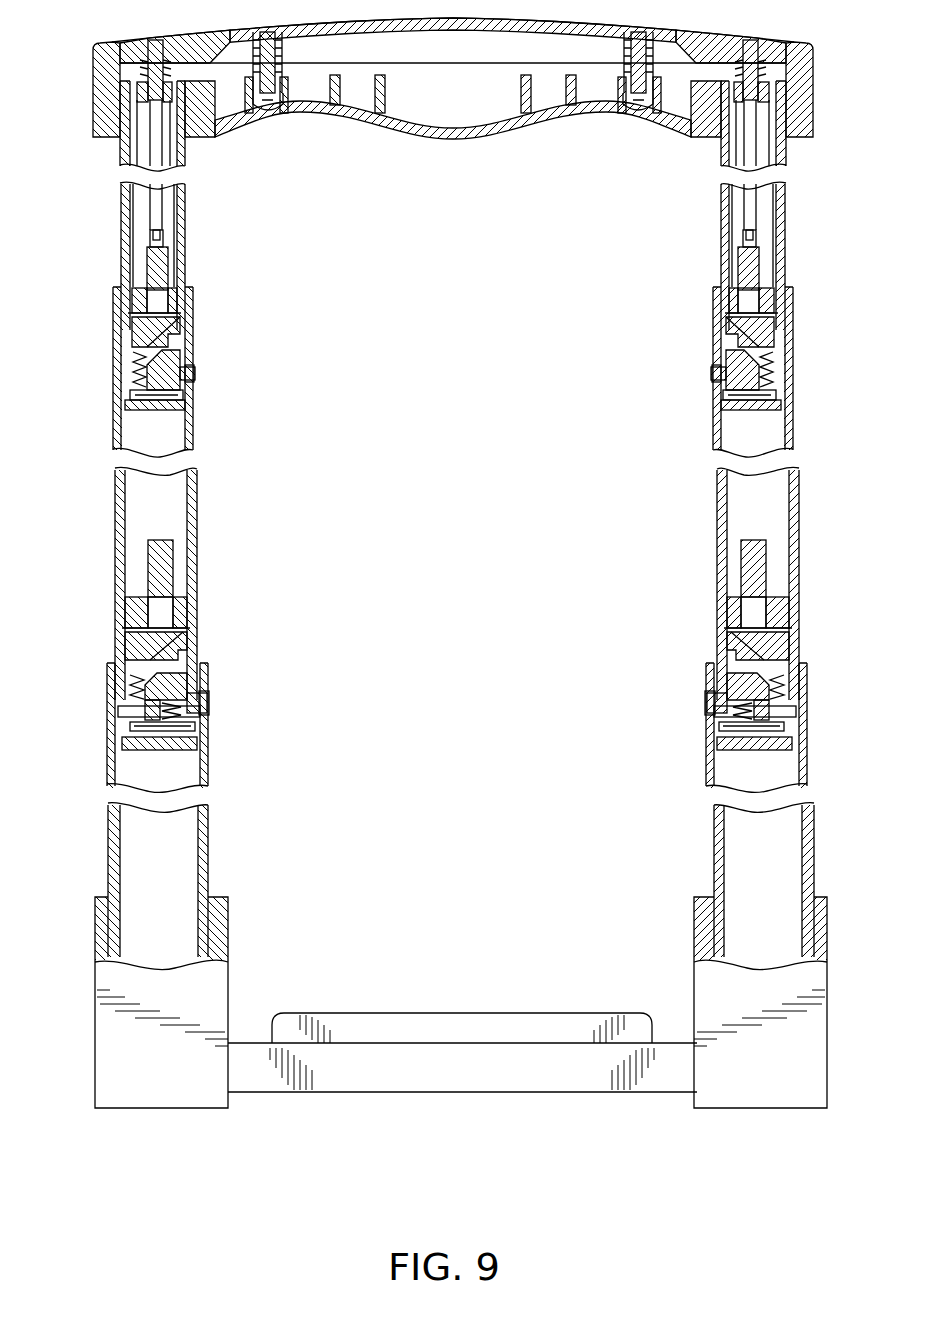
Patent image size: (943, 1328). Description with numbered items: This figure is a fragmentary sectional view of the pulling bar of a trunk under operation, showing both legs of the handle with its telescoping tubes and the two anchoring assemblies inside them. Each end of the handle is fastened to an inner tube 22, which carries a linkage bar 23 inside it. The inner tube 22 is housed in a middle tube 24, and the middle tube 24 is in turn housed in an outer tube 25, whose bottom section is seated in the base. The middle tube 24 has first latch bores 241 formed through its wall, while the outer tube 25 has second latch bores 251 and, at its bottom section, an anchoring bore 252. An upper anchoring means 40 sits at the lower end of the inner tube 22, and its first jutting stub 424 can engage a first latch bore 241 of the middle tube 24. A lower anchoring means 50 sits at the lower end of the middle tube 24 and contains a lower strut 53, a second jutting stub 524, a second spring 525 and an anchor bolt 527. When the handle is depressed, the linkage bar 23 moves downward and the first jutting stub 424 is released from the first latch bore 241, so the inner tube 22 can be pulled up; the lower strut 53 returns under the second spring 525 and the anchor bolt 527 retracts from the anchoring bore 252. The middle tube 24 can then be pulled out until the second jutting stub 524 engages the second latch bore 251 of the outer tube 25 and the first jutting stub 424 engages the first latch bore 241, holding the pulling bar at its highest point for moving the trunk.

The inner tube 22 is at (725, 230).
The linkage bar 23 is at (748, 150).
The middle tube 24 is at (718, 434).
The first latch bore 241 is at (453, 375).
The outer tube 25 is at (715, 767).
The second latch bore 251 is at (457, 706).
The anchoring bore 252 is at (108, 882).
The upper anchoring means 40 is at (140, 238).
The first jutting stub 424 is at (193, 373).
The lower anchoring means 50 is at (143, 557).
The lower strut 53 is at (170, 578).
The second jutting stub 524 is at (188, 713).
The second spring 525 is at (125, 690).
The anchor bolt 527 is at (122, 712).